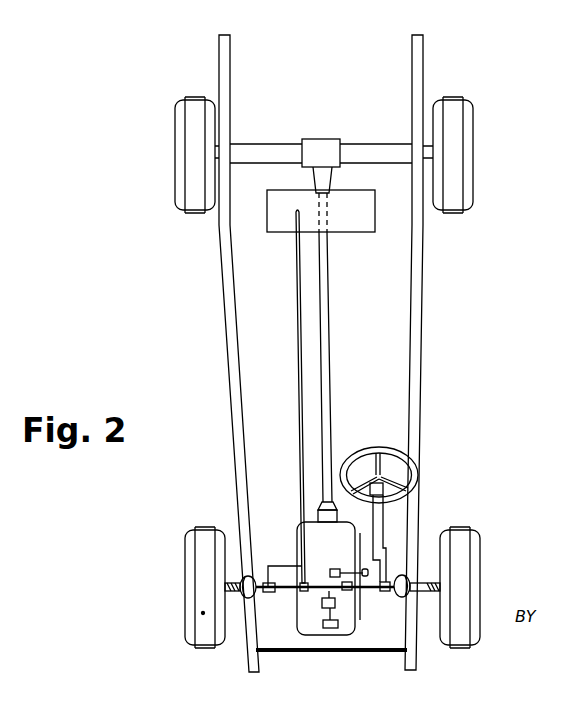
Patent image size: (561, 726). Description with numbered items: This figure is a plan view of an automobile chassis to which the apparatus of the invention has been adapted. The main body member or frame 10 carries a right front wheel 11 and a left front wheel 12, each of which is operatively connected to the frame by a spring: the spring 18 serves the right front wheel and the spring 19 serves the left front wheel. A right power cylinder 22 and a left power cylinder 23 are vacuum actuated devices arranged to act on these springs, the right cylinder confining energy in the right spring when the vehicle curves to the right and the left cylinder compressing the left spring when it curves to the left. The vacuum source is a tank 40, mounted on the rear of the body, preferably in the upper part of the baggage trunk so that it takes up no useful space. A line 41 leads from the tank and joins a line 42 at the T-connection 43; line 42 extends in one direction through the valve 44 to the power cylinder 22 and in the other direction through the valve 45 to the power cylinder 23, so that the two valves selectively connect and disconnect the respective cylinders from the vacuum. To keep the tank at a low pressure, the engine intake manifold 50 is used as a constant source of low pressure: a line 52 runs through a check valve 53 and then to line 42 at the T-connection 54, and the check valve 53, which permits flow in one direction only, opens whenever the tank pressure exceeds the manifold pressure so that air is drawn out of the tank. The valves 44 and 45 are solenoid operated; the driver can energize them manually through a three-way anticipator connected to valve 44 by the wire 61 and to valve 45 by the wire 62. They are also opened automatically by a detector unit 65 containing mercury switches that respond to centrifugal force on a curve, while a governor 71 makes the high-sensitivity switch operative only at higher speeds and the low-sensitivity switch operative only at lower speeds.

The frame 10 is at (226, 368).
The right front wheel 11 is at (198, 641).
The left front wheel 12 is at (449, 641).
The spring 18 is at (228, 594).
The spring 19 is at (432, 593).
The power cylinder 22 is at (241, 579).
The power cylinder 23 is at (401, 575).
The tank 40 is at (268, 227).
The line 41 is at (296, 276).
The line 42 is at (290, 594).
The T-connection 43 is at (304, 592).
The valve 44 is at (270, 593).
The valve 45 is at (386, 592).
The engine intake manifold 50 is at (361, 535).
The line 52 is at (347, 569).
The check valve 53 is at (331, 570).
The T-connection 54 is at (352, 590).
The wire 61 is at (283, 566).
The wire 62 is at (383, 535).
The detector unit 65 is at (335, 606).
The governor 71 is at (323, 628).